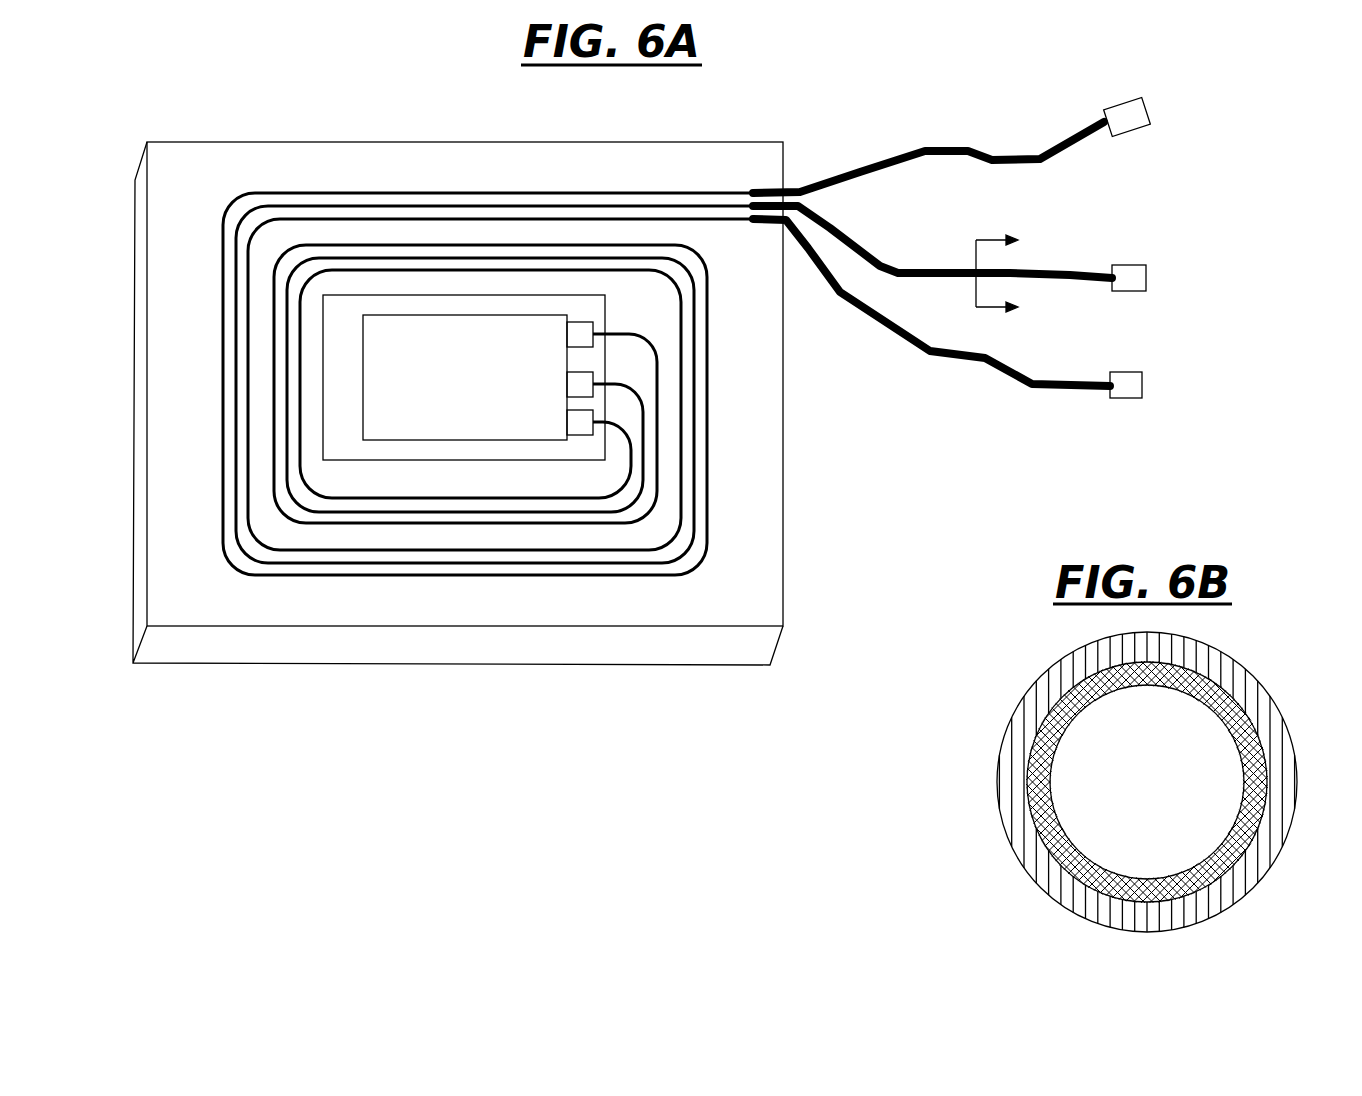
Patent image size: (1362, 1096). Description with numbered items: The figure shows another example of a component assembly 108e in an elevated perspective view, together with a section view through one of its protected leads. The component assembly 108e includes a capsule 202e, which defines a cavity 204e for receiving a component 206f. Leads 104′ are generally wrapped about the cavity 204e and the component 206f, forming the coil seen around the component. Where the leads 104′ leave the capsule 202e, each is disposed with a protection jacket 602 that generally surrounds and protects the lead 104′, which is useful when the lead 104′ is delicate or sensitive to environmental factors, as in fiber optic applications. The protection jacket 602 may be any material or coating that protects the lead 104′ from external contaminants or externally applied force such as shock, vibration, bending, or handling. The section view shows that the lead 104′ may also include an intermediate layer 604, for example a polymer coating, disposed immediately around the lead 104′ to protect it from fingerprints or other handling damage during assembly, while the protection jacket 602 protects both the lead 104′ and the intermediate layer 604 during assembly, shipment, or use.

In FIG. 6A, the component assembly 108e is at (420, 118).
In FIG. 6A, the capsule 202e is at (765, 514).
In FIG. 6A, the cavity 204e is at (402, 293).
In FIG. 6A, the component 206f is at (478, 377).
In FIG. 6A, the lead 104′ is at (623, 190).
In FIG. 6B, the lead 104′ is at (1162, 761).
In FIG. 6A, the protection jacket 602 is at (919, 148).
In FIG. 6B, the protection jacket 602 is at (1256, 696).
In FIG. 6B, the intermediate layer 604 is at (1192, 872).